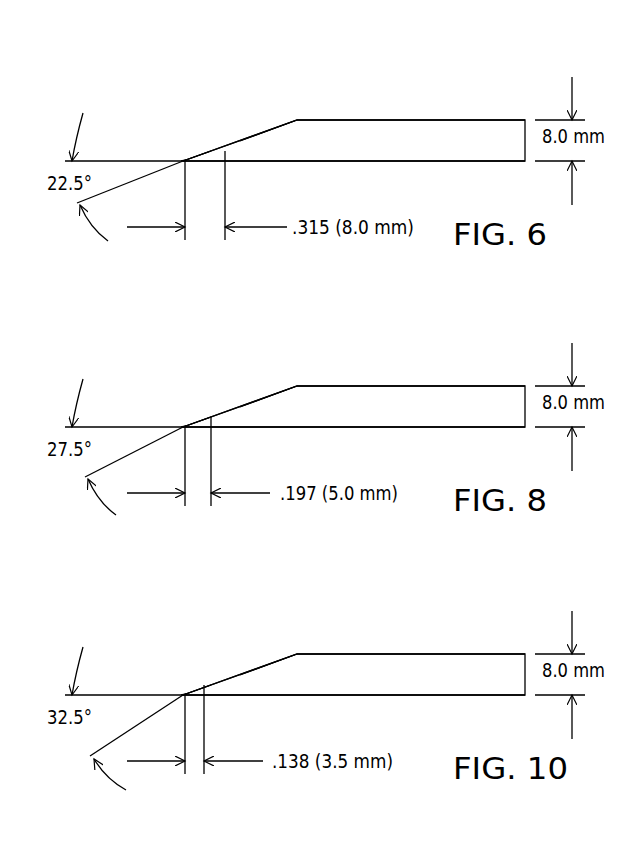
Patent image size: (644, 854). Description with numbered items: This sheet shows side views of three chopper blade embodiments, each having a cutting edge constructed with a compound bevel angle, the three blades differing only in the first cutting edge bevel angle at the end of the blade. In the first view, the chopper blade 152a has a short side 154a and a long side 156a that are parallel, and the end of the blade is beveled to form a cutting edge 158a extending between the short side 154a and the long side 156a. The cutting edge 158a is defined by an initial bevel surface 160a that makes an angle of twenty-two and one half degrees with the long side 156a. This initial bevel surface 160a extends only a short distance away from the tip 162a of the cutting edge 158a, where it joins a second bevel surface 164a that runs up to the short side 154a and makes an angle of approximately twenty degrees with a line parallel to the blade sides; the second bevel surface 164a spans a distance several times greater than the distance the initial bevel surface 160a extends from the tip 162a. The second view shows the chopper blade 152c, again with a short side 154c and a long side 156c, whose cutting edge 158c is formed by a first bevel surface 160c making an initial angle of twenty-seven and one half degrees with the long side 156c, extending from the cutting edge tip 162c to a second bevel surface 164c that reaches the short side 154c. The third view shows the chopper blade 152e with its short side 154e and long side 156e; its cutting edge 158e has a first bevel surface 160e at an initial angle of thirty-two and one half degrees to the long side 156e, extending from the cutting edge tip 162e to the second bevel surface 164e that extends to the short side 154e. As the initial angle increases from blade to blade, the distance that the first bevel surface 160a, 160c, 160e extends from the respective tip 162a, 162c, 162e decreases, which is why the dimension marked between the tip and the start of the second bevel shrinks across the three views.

In FIG. 6, the chopper blade 152a is at (488, 105).
In FIG. 6, the short side 154a is at (395, 120).
In FIG. 6, the long side 156a is at (335, 161).
In FIG. 6, the cutting edge 158a is at (222, 138).
In FIG. 6, the initial bevel surface 160a is at (205, 155).
In FIG. 6, the tip 162a is at (182, 159).
In FIG. 6, the second bevel surface 164a is at (260, 132).
In FIG. 8, the chopper blade 152c is at (300, 368).
In FIG. 8, the short side 154c is at (411, 352).
In FIG. 8, the long side 156c is at (354, 445).
In FIG. 8, the cutting edge 158c is at (204, 378).
In FIG. 8, the first bevel surface 160c is at (161, 396).
In FIG. 8, the cutting edge tip 162c is at (149, 407).
In FIG. 8, the second bevel surface 164c is at (266, 361).
In FIG. 10, the chopper blade 152e is at (300, 636).
In FIG. 10, the short side 154e is at (411, 620).
In FIG. 10, the long side 156e is at (354, 713).
In FIG. 10, the cutting edge 158e is at (204, 646).
In FIG. 10, the first bevel surface 160e is at (161, 664).
In FIG. 10, the cutting edge tip 162e is at (149, 675).
In FIG. 10, the second bevel surface 164e is at (266, 629).